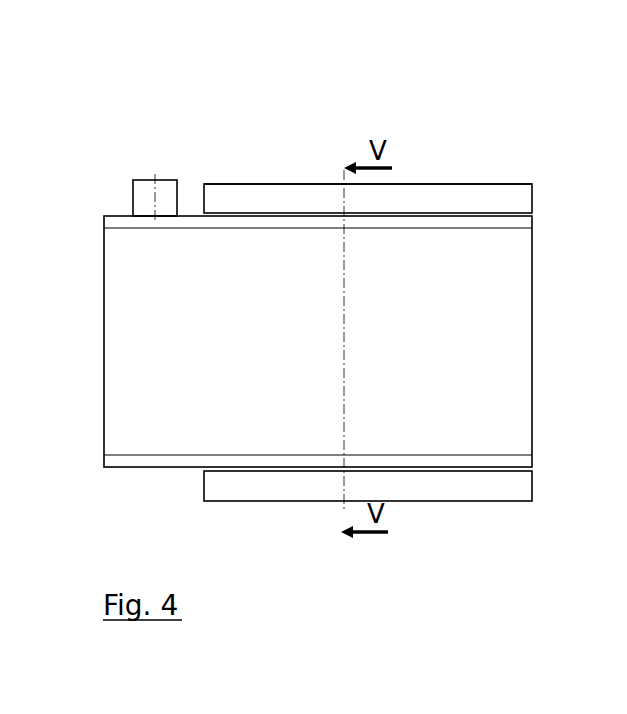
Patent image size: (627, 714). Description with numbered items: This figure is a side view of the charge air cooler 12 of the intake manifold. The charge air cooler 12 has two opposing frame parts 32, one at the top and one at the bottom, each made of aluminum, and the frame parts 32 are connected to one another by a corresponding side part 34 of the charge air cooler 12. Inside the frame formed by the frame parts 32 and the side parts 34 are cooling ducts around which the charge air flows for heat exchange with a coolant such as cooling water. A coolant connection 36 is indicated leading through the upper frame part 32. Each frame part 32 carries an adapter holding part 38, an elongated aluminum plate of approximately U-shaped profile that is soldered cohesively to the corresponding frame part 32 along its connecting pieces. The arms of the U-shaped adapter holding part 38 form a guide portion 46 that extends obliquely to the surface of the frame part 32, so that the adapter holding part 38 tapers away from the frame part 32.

The charge air cooler 12 is at (137, 68).
The frame part 32 is at (512, 223).
The side part 34 is at (485, 323).
The coolant connection 36 is at (158, 185).
The adapter holding part 38 is at (500, 186).
The guide portion 46 is at (418, 197).